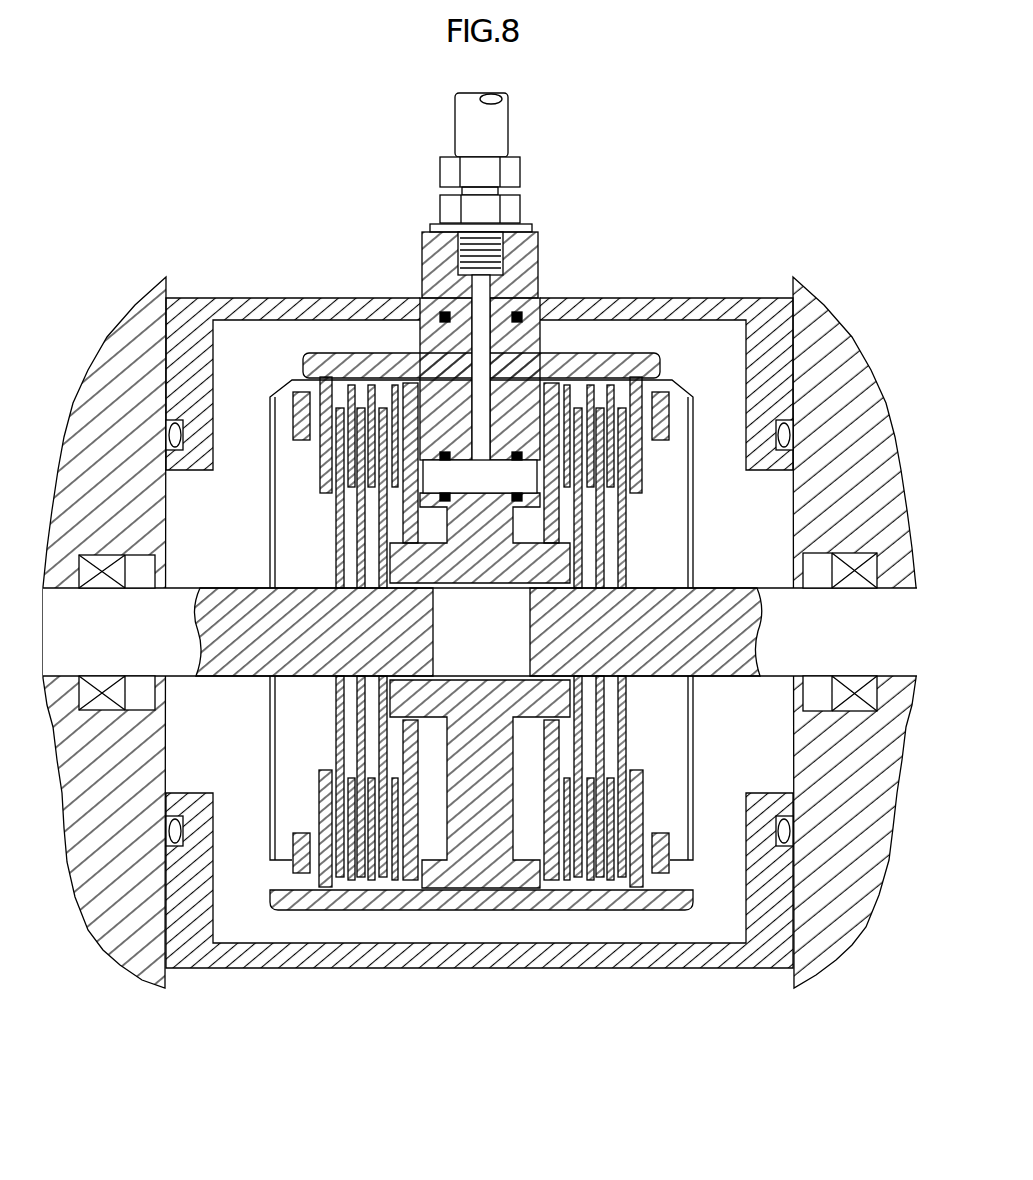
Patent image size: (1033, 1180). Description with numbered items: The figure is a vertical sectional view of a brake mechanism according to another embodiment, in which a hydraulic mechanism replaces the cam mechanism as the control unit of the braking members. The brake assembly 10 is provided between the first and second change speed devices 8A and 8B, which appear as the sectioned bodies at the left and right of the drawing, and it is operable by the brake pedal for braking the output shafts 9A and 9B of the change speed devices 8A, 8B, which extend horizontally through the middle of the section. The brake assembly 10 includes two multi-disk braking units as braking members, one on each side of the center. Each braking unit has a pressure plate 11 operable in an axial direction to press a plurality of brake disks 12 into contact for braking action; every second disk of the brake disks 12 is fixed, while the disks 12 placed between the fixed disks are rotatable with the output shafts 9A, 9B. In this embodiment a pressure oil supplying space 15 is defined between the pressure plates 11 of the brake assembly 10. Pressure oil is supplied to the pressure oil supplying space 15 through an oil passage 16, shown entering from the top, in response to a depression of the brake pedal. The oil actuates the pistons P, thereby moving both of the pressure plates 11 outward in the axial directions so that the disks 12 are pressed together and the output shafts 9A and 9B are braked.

The first change speed device 8A is at (107, 342).
The second change speed device 8B is at (847, 340).
The output shaft 9A is at (190, 588).
The output shaft 9B is at (768, 592).
The brake assembly 10 is at (687, 387).
The pressure plate 11 is at (405, 880).
The brake disks 12 is at (355, 735).
The pressure oil supplying space 15 is at (477, 487).
The oil passage 16 is at (500, 127).
The piston P is at (433, 483).